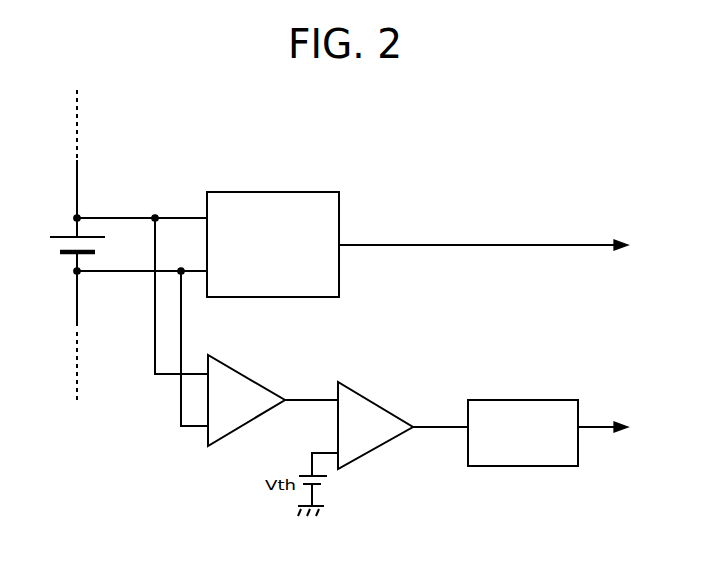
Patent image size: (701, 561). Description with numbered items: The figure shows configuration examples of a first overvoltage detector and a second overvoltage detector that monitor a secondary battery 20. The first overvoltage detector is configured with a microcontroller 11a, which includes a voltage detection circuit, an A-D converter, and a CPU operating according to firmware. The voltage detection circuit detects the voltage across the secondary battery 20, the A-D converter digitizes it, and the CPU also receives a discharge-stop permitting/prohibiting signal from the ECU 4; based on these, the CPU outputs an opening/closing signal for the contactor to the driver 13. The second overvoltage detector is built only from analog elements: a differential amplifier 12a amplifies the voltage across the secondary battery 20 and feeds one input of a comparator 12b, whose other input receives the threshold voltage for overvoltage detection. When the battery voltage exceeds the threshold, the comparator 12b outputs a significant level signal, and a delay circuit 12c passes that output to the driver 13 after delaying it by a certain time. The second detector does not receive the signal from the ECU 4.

The secondary battery 20 is at (62, 235).
The ECU 4 is at (272, 181).
The microcontroller 11a is at (303, 191).
The driver 13 is at (501, 338).
The differential amplifier 12a is at (248, 376).
The comparator 12b is at (378, 400).
The delay circuit 12c is at (523, 400).